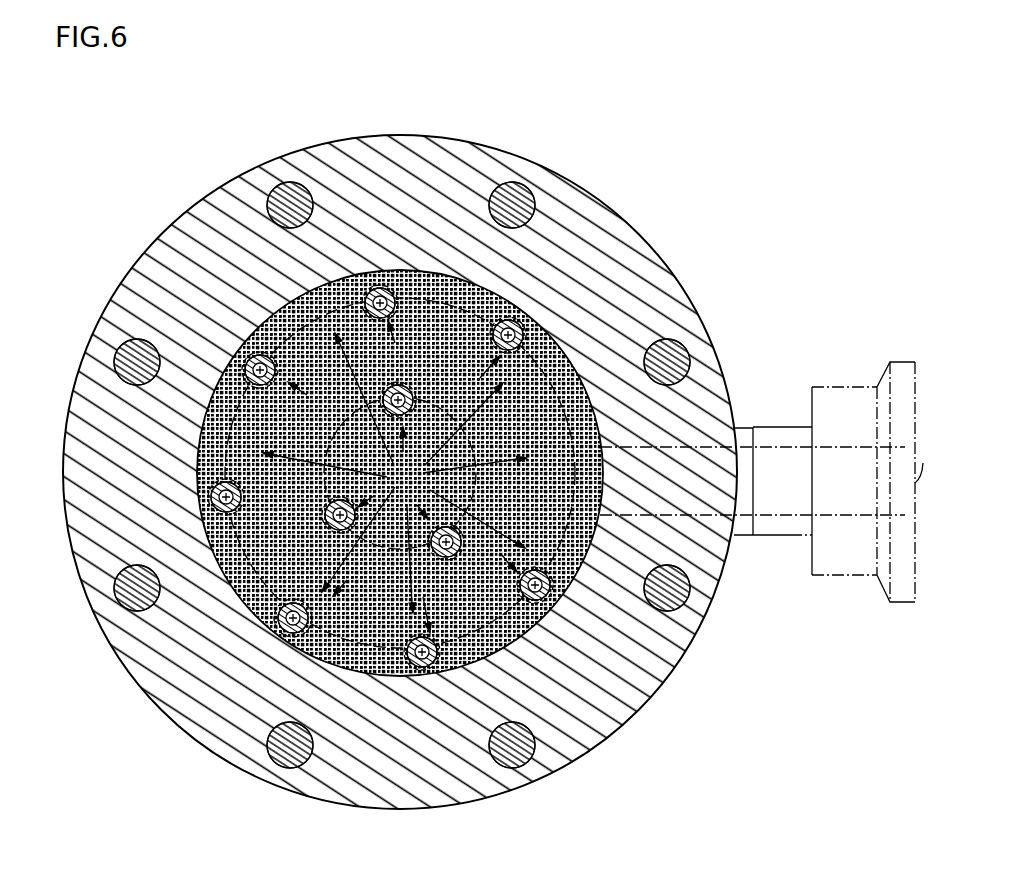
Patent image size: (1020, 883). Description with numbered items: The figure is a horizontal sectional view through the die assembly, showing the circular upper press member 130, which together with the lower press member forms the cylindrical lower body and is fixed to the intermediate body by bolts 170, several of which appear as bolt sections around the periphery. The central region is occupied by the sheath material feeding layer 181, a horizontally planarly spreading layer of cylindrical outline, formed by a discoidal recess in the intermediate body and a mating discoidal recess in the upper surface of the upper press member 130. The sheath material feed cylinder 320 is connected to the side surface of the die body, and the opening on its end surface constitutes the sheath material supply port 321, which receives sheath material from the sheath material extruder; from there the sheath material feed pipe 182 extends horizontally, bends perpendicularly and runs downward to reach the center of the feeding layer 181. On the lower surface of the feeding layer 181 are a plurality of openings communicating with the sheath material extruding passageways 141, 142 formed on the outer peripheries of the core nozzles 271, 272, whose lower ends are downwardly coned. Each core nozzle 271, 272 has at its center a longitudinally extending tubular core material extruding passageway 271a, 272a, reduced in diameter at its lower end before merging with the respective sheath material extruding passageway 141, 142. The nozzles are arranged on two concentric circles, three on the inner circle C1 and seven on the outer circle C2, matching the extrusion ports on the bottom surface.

The upper press member 130 is at (673, 683).
The bolt 170 is at (512, 748).
The sheath material feeding layer 181 is at (598, 543).
The sheath material feed pipe 182 is at (777, 460).
The sheath material feed cylinder 320 is at (795, 422).
The sheath material supply port 321 is at (925, 387).
The sheath material extruding passageway 141 is at (468, 555).
The core nozzle 271 is at (505, 556).
The core material extruding passageway 271a is at (448, 550).
The sheath material extruding passageway 142 is at (287, 622).
The core nozzle 272 is at (280, 620).
The core material extruding passageway 272a is at (292, 624).
The inner circle C1 is at (447, 408).
The outer circle C2 is at (343, 310).